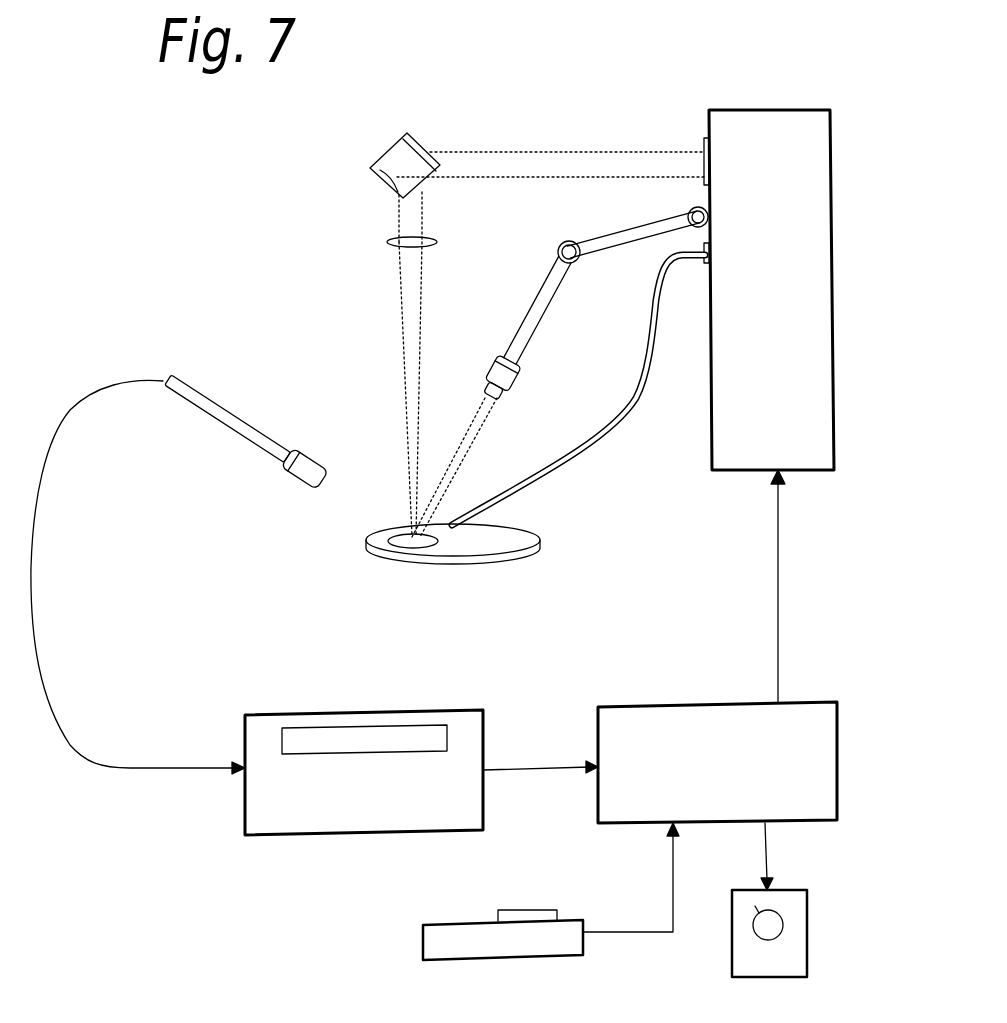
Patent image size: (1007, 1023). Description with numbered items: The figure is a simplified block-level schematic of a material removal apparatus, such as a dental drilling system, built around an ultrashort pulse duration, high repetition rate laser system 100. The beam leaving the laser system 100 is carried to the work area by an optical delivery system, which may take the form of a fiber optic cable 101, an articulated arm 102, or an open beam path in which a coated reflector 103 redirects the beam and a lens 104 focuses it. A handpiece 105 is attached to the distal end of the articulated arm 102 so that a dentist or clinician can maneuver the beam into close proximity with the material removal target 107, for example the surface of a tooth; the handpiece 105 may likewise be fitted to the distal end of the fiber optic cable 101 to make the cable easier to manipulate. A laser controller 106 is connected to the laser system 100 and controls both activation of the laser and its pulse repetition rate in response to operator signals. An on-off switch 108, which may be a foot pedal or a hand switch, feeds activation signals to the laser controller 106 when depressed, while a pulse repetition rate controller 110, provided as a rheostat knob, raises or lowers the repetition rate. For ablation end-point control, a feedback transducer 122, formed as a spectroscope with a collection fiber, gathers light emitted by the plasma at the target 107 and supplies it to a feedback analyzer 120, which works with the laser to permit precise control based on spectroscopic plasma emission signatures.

The laser system 100 is at (833, 135).
The fiber optic cable 101 is at (640, 390).
The articulated arm 102 is at (537, 297).
The coated reflector 103 is at (418, 146).
The lens 104 is at (387, 243).
The handpiece 105 is at (486, 383).
The laser controller 106 is at (645, 705).
The material removal target 107 is at (413, 543).
The on-off switch 108 is at (440, 922).
The pulse repetition rate controller 110 is at (810, 942).
The feedback analyzer 120 is at (438, 712).
The feedback transducer 122 is at (236, 416).